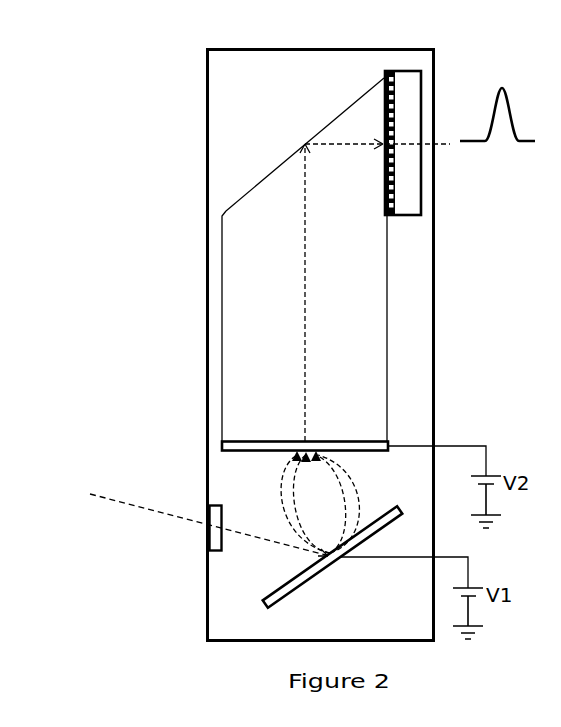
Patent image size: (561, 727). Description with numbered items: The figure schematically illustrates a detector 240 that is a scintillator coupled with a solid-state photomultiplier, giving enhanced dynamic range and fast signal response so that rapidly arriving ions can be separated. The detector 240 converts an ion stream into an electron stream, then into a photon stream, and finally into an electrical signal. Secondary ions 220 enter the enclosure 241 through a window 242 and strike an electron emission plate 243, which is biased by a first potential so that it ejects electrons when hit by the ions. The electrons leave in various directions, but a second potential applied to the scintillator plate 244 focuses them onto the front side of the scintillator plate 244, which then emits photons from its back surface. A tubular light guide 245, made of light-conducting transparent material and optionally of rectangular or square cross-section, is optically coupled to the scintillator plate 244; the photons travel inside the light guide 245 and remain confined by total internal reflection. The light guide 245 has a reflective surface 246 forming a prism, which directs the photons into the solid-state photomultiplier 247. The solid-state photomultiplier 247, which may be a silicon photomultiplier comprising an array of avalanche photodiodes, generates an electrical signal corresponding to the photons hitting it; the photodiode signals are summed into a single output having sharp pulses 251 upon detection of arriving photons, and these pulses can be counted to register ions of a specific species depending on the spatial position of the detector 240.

The secondary ions 220 is at (110, 498).
The detector 240 is at (168, 114).
The enclosure 241 is at (207, 180).
The window 242 is at (213, 505).
The electron emission plate 243 is at (305, 585).
The scintillator plate 244 is at (330, 441).
The tubular light guide 245 is at (222, 330).
The reflective surface 246 is at (342, 110).
The solid-state photomultiplier 247 is at (400, 72).
The sharp pulses 251 is at (500, 78).